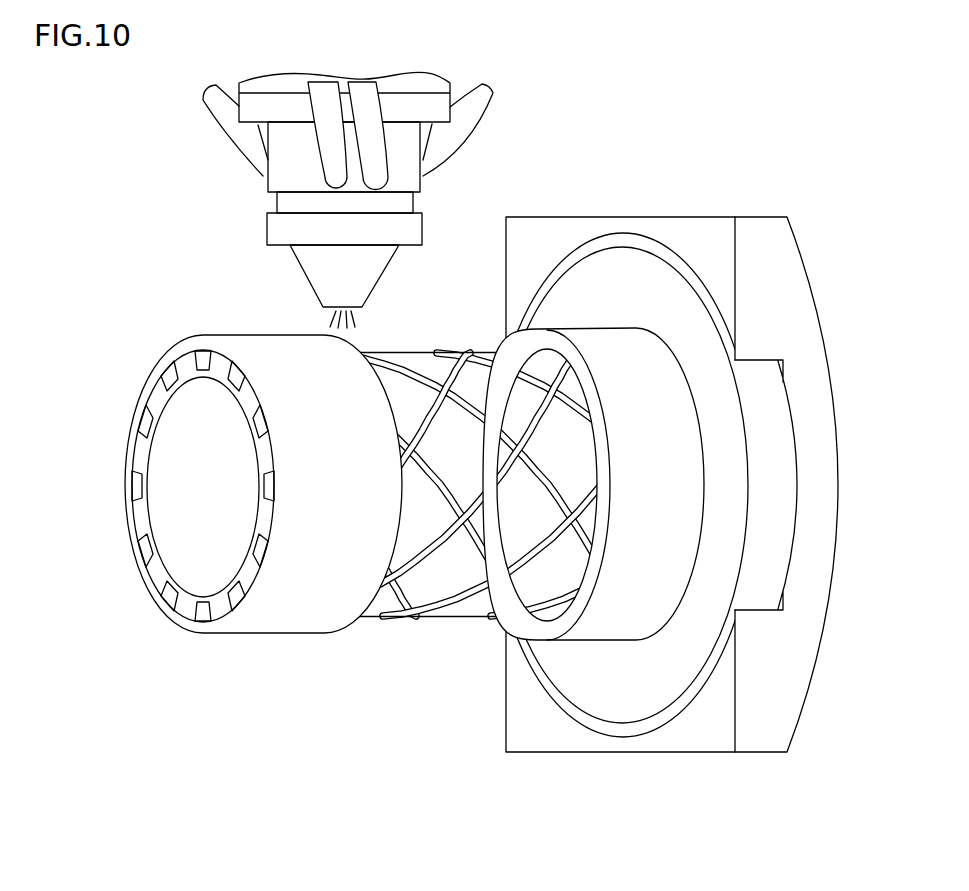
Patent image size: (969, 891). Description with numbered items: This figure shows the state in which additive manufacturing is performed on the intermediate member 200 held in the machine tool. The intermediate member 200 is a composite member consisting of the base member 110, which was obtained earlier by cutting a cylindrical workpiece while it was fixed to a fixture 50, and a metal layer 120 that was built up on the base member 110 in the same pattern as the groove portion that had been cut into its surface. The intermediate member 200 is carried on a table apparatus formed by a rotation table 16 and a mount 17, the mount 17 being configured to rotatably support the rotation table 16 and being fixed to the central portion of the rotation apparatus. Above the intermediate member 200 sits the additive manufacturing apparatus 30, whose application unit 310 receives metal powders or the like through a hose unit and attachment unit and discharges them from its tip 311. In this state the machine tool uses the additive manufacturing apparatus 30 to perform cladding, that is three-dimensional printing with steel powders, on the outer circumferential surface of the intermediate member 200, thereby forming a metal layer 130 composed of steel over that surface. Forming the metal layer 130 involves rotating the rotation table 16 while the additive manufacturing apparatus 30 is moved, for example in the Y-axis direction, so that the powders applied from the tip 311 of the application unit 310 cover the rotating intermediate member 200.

The mount 17 is at (520, 718).
The rotation table 16 is at (725, 505).
The fixture 50 is at (667, 437).
The intermediate member 200 is at (455, 327).
The base member 110 is at (140, 452).
The metal layer 120 is at (137, 487).
The metal layer 130 is at (126, 519).
The additive manufacturing apparatus 30 is at (302, 200).
The application unit 310 is at (290, 178).
The tip 311 is at (330, 283).